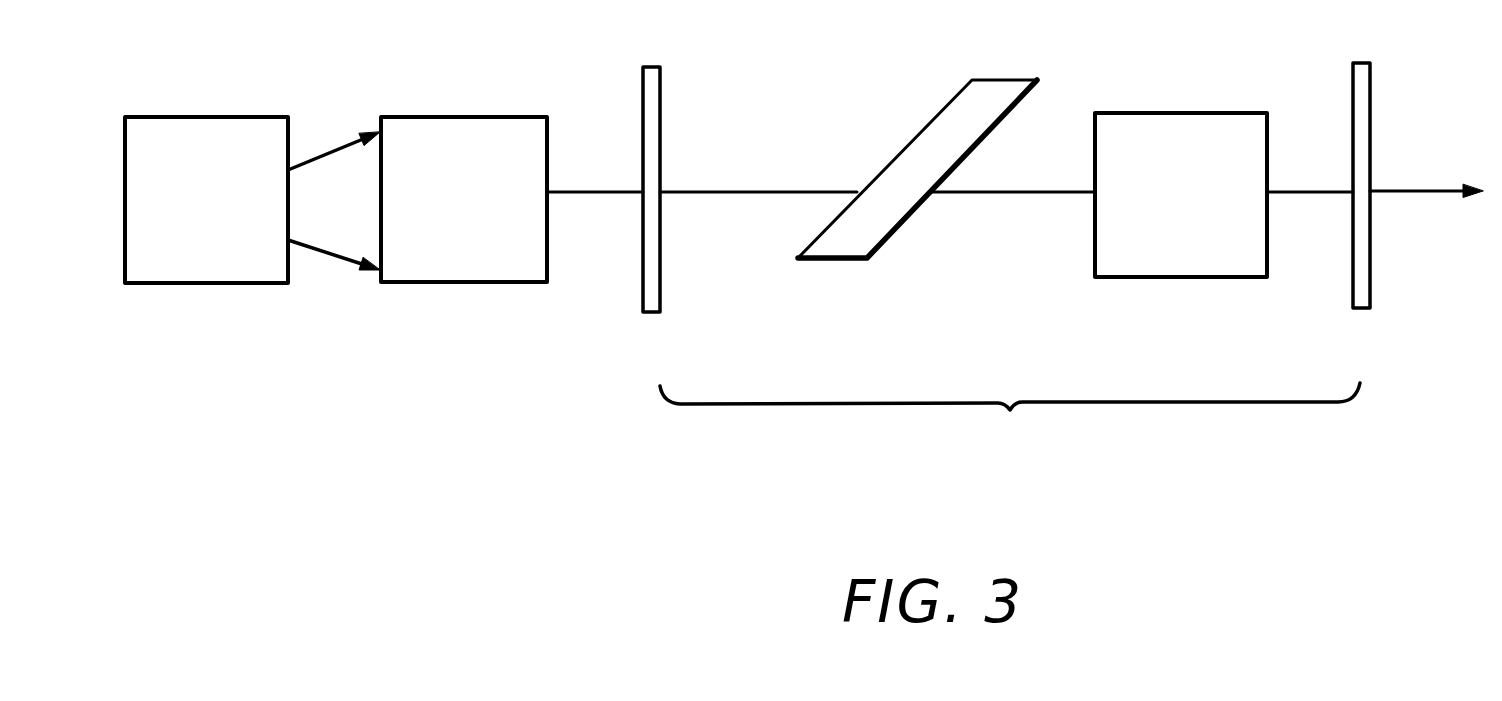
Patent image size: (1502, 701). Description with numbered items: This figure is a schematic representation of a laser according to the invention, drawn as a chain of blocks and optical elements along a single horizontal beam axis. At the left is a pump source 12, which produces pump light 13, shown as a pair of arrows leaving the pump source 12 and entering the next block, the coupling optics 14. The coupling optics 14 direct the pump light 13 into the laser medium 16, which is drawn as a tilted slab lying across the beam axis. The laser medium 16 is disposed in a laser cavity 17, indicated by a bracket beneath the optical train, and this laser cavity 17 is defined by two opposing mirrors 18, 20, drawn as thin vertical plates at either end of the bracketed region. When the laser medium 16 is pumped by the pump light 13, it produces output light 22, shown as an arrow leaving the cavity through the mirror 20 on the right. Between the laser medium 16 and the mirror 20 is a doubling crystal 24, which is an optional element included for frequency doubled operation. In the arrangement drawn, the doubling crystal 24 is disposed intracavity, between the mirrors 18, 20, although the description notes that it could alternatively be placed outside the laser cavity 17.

The pump source 12 is at (222, 212).
The pump light 13 is at (327, 151).
The coupling optics 14 is at (486, 212).
The laser medium 16 is at (1021, 79).
The laser cavity 17 is at (1010, 419).
The mirror 18 is at (660, 90).
The mirror 20 is at (1371, 75).
The output light 22 is at (1435, 188).
The doubling crystal 24 is at (1155, 208).